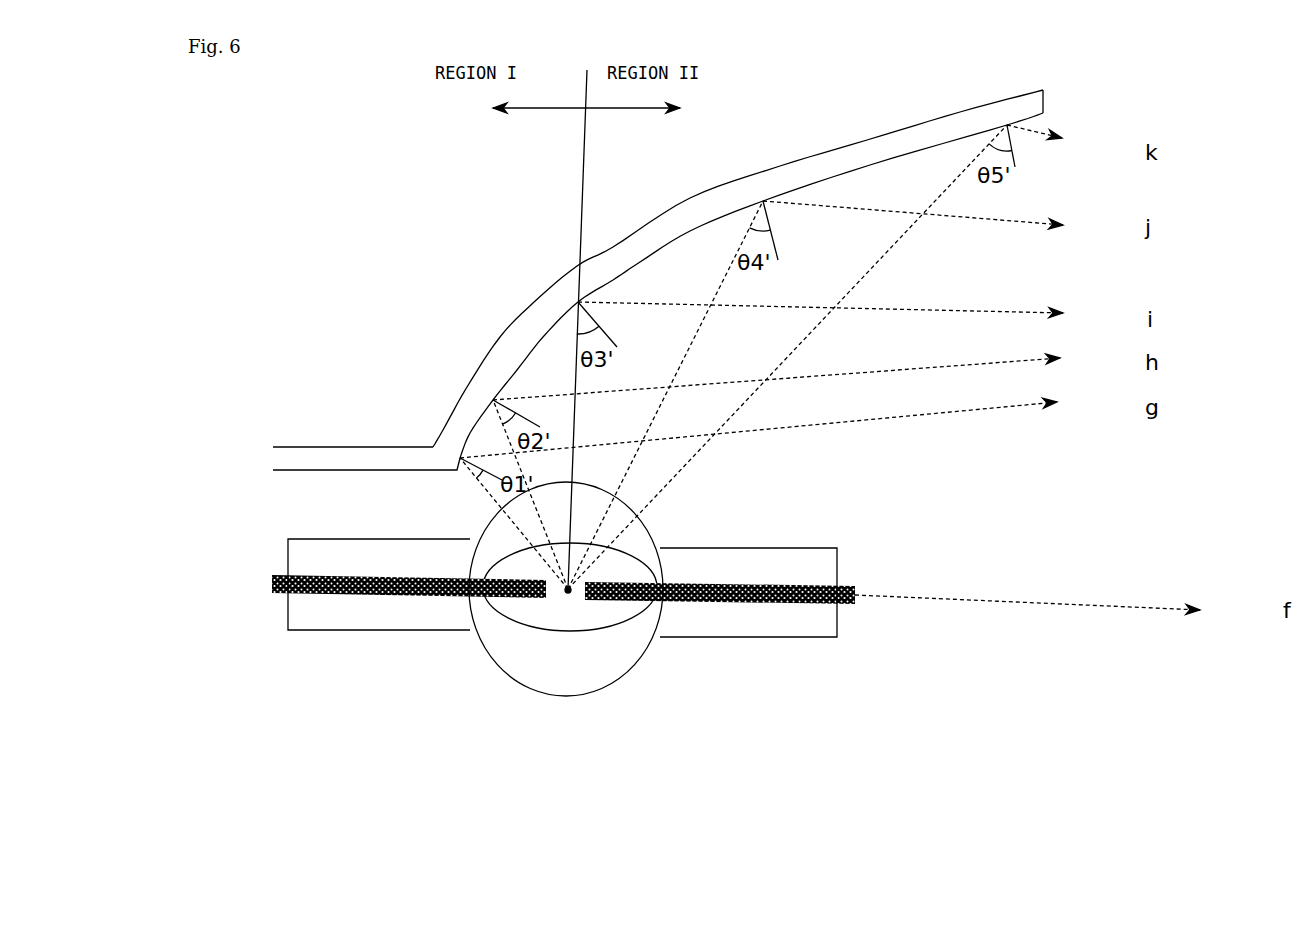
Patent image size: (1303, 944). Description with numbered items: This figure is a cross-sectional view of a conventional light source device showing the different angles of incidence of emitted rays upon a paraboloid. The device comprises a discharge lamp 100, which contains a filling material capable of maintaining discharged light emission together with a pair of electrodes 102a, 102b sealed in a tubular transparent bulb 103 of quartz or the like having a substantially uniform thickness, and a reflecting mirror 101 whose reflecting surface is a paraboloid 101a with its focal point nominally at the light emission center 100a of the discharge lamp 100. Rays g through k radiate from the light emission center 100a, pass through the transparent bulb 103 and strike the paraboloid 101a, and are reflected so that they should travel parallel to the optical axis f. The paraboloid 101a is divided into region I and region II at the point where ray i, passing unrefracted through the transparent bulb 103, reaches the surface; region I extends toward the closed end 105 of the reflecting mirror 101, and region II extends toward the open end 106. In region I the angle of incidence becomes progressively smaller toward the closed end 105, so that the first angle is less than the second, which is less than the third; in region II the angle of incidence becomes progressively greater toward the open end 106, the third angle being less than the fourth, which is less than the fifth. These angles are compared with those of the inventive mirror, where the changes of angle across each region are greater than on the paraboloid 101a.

The discharge lamp 100 is at (566, 651).
The light emission center 100a is at (556, 596).
The reflecting mirror 101 is at (780, 251).
The paraboloid 101a is at (838, 172).
The electrode 102a is at (318, 593).
The electrode 102b is at (818, 607).
The transparent bulb 103 is at (628, 670).
The closed end 105 is at (433, 441).
The open end 106 is at (1045, 92).